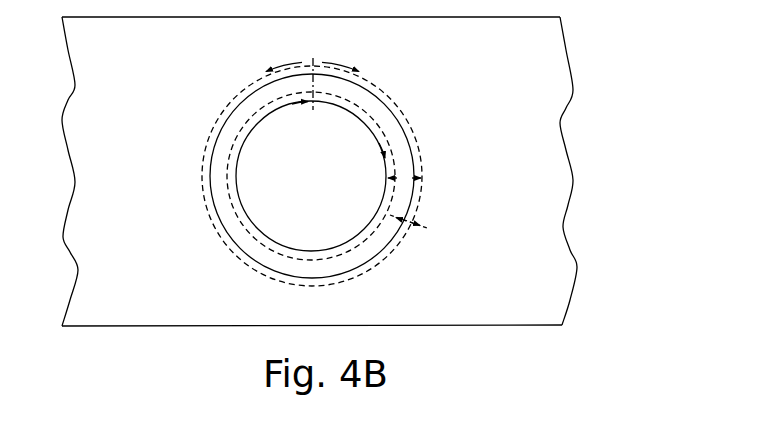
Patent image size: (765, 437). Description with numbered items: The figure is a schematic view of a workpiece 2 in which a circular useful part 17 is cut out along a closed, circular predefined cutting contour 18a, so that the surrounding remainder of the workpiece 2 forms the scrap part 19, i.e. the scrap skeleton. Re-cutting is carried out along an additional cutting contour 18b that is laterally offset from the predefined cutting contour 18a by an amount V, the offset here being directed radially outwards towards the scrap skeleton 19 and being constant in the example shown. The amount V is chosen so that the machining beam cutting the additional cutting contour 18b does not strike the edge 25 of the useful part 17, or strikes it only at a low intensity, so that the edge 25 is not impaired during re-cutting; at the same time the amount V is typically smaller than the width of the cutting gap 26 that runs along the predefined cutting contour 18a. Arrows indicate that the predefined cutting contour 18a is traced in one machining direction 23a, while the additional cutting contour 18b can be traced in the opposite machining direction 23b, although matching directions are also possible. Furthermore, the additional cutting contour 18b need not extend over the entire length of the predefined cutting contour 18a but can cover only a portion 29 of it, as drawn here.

The workpiece 2 is at (362, 171).
The scrap part 19 is at (552, 72).
The useful part 17 is at (350, 125).
The portion 29 is at (240, 160).
The edge 25 is at (233, 185).
The cutting gap 26 is at (417, 172).
The predefined cutting contour 18a is at (235, 125).
The additional cutting contour 18b is at (398, 130).
The machining direction 23a is at (327, 61).
The opposite machining direction 23b is at (296, 61).
The amount of the offset V is at (408, 225).